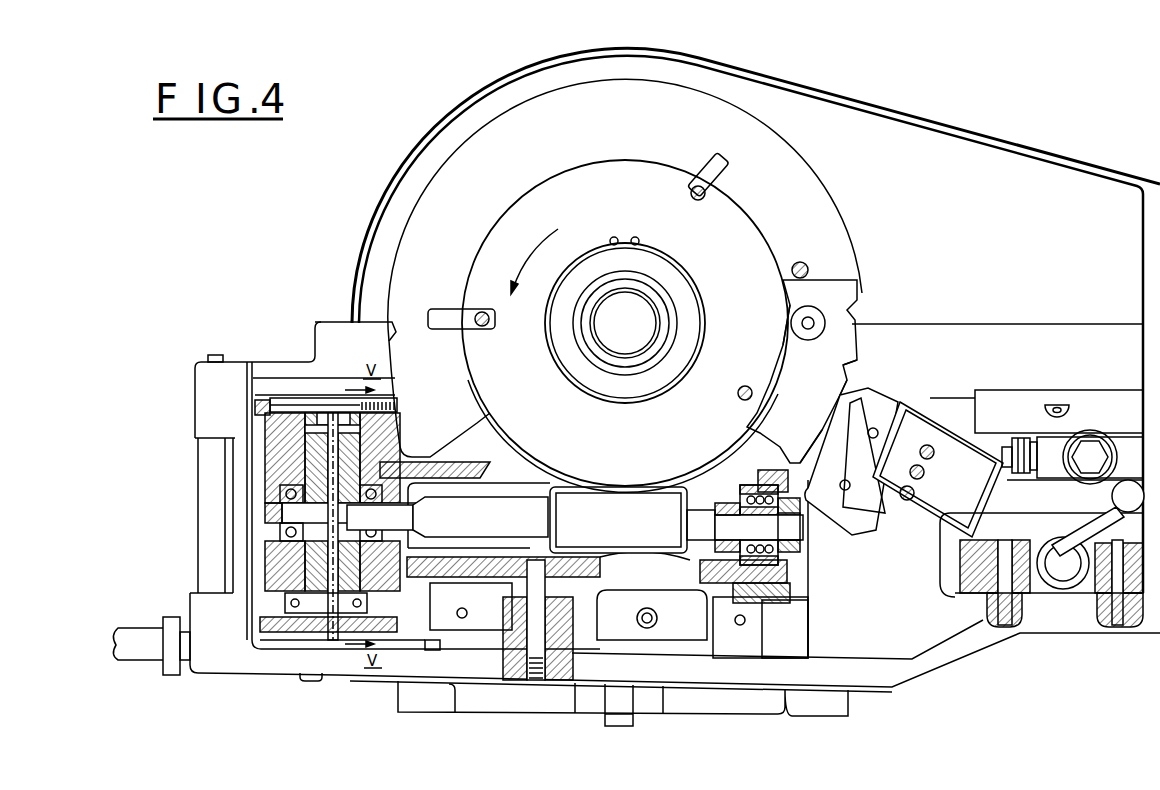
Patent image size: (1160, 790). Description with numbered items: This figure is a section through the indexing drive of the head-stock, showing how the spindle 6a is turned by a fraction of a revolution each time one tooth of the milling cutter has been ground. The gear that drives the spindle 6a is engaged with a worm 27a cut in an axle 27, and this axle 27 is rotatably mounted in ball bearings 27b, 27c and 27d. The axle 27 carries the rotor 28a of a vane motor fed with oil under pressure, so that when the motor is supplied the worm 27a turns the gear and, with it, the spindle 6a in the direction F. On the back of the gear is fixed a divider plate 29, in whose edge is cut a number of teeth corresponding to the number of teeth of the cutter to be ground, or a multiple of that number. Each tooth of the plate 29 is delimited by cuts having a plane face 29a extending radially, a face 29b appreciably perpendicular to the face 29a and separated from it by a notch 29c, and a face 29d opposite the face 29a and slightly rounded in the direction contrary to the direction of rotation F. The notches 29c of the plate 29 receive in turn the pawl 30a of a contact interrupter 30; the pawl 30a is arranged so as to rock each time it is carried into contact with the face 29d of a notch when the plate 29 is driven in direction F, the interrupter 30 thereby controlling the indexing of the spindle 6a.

The spindle 6a is at (636, 300).
The axle 27 is at (483, 508).
The worm 27a is at (630, 510).
The ball bearing 27b is at (800, 560).
The ball bearing 27c is at (432, 457).
The ball bearing 27d is at (280, 487).
The rotor 28a is at (320, 595).
The divider plate 29 is at (852, 323).
The plane face 29a is at (850, 378).
The face 29b is at (784, 360).
The notch 29c is at (823, 326).
The face 29d is at (845, 387).
The contact interrupter 30 is at (876, 415).
The pawl 30a is at (822, 440).